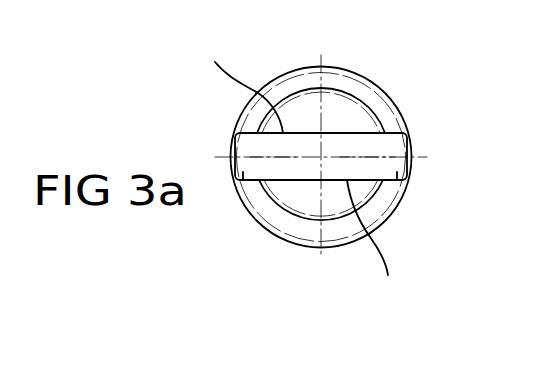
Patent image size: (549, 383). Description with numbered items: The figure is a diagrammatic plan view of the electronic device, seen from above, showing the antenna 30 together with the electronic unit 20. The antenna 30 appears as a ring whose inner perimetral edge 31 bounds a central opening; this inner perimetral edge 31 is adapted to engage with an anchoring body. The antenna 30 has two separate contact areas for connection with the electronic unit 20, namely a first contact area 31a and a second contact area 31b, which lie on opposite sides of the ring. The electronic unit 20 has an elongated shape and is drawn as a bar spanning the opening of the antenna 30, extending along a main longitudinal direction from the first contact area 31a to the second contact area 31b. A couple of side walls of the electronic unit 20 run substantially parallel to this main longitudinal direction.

The electronic unit 20 is at (307, 192).
The antenna 30 is at (236, 114).
The inner perimetral edge 31 is at (346, 93).
The first contact area 31a is at (397, 180).
The second contact area 31b is at (243, 180).